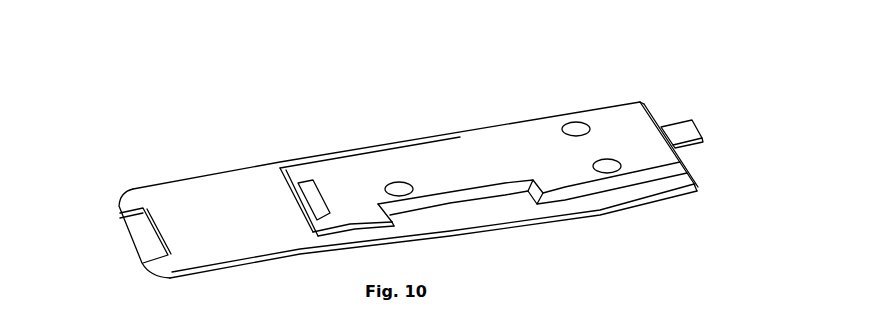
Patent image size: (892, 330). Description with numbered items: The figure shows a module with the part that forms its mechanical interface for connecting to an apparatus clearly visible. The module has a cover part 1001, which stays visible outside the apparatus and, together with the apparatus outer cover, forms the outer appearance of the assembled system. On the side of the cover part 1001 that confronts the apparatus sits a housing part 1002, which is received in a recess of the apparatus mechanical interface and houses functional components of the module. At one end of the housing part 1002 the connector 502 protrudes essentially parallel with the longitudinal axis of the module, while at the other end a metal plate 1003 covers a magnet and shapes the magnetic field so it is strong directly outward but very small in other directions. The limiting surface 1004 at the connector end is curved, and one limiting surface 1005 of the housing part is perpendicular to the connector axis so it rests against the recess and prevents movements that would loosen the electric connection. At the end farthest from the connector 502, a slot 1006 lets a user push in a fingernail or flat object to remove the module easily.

The cover part 1001 is at (197, 187).
The housing part 1002 is at (475, 150).
The metal plate 1003 is at (305, 188).
The limiting surface 1004 is at (681, 168).
The limiting surface 1005 is at (283, 178).
The connector 502 is at (677, 130).
The slot 1006 is at (137, 242).